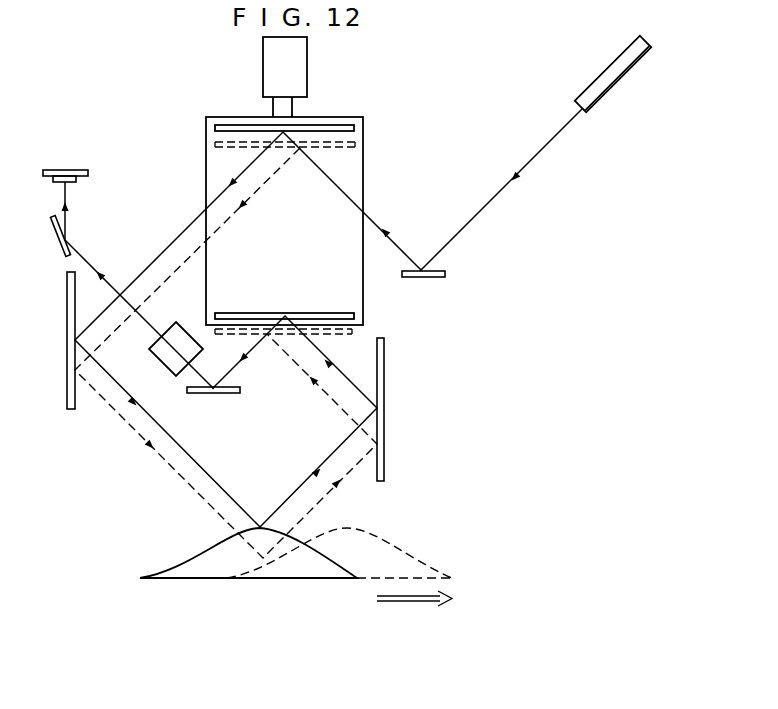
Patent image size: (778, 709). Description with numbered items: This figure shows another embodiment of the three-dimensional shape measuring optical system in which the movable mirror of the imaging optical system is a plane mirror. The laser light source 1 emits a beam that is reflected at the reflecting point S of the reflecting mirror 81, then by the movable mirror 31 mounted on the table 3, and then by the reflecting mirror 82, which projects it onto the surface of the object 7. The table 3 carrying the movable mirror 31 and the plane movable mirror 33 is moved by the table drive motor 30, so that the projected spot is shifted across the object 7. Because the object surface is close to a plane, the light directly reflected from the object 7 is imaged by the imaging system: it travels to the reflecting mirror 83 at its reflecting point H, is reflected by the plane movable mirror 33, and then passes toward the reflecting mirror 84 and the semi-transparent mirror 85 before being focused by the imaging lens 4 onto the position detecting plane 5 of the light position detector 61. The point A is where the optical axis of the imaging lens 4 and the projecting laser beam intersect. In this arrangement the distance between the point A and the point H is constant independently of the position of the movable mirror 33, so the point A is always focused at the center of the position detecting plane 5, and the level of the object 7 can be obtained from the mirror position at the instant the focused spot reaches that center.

The laser light source 1 is at (603, 98).
The table 3 is at (364, 160).
The imaging lens 4 is at (163, 362).
The position detecting plane 5 is at (70, 185).
The object 7 is at (205, 572).
The table drive motor 30 is at (307, 52).
The movable mirror 31 is at (337, 124).
The movable mirror 33 is at (322, 313).
The light position detector 61 is at (66, 170).
The reflecting mirror 81 is at (418, 278).
The reflecting mirror 82 is at (67, 397).
The reflecting mirror 83 is at (385, 385).
The reflecting mirror 84 is at (240, 393).
The semi-transparent mirror 85 is at (58, 236).
The reflecting point S is at (421, 266).
The reflecting point H is at (207, 393).
The point A is at (261, 522).